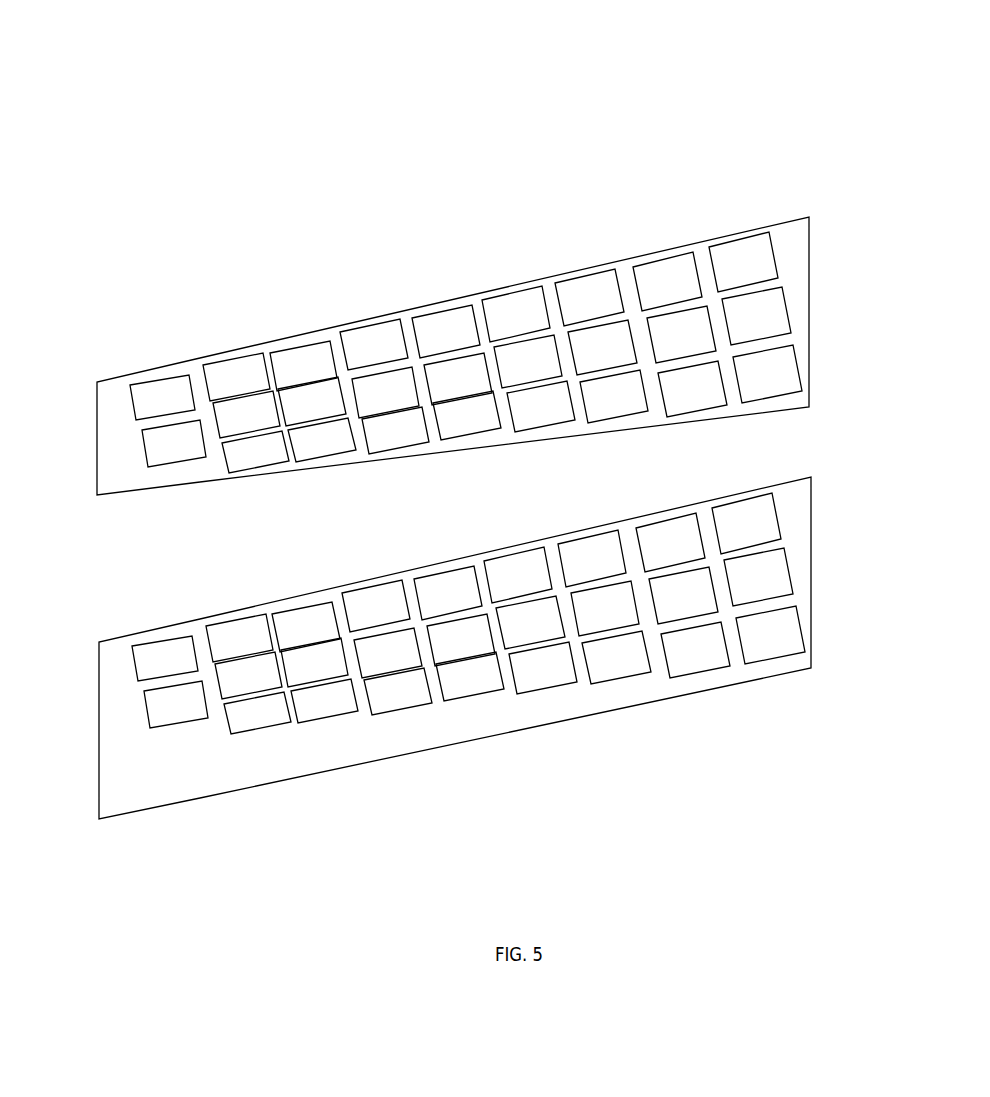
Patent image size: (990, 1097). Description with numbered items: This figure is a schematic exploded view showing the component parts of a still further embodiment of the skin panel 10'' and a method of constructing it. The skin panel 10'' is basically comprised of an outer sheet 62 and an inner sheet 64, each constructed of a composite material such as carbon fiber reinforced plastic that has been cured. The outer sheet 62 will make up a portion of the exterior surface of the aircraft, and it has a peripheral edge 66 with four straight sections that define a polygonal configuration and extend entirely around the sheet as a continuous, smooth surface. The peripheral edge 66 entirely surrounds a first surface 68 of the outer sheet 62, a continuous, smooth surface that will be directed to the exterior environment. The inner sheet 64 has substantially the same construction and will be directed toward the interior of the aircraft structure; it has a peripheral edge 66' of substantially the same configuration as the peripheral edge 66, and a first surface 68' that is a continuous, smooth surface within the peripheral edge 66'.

The skin panel 10'' is at (537, 430).
The outer sheet 62 is at (232, 347).
The inner sheet 64 is at (811, 597).
The peripheral edge 66 is at (566, 349).
The peripheral edge 66' is at (581, 637).
The first surface 68 is at (148, 395).
The first surface 68' is at (149, 691).